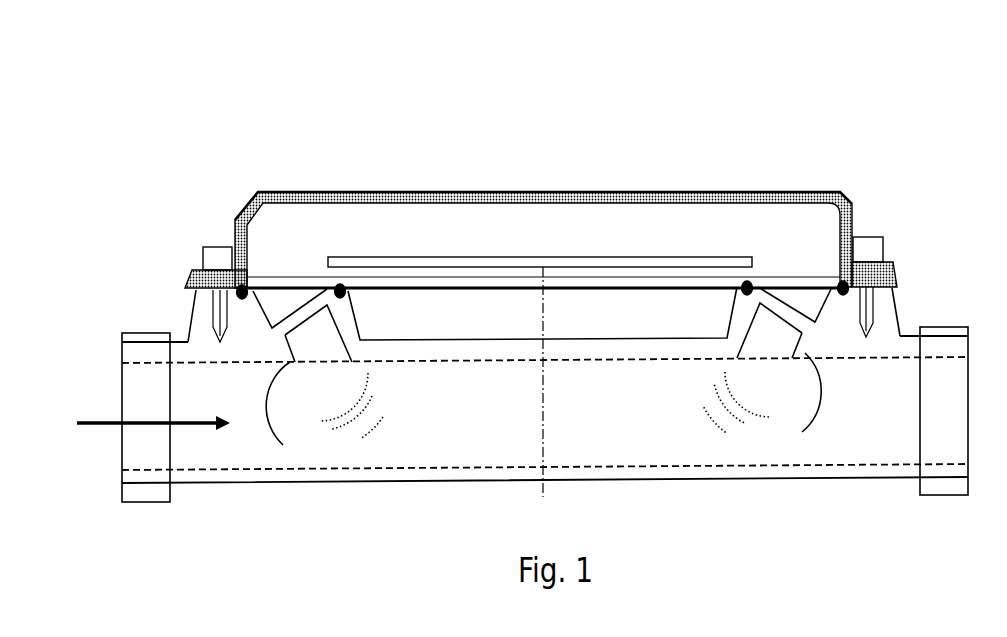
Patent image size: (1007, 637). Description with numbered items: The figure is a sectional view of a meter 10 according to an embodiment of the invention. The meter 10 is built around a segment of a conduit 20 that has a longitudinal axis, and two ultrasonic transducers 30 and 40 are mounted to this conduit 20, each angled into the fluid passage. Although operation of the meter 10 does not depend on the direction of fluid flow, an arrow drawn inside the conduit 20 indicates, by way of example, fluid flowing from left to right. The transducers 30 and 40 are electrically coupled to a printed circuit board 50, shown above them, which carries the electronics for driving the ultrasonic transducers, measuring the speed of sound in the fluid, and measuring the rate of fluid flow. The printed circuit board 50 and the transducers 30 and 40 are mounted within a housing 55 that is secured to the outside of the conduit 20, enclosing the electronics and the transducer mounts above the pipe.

The meter 10 is at (835, 135).
The conduit 20 is at (213, 485).
The ultrasonic transducer 30 is at (318, 379).
The ultrasonic transducer 40 is at (768, 370).
The printed circuit board 50 is at (475, 258).
The housing 55 is at (270, 192).